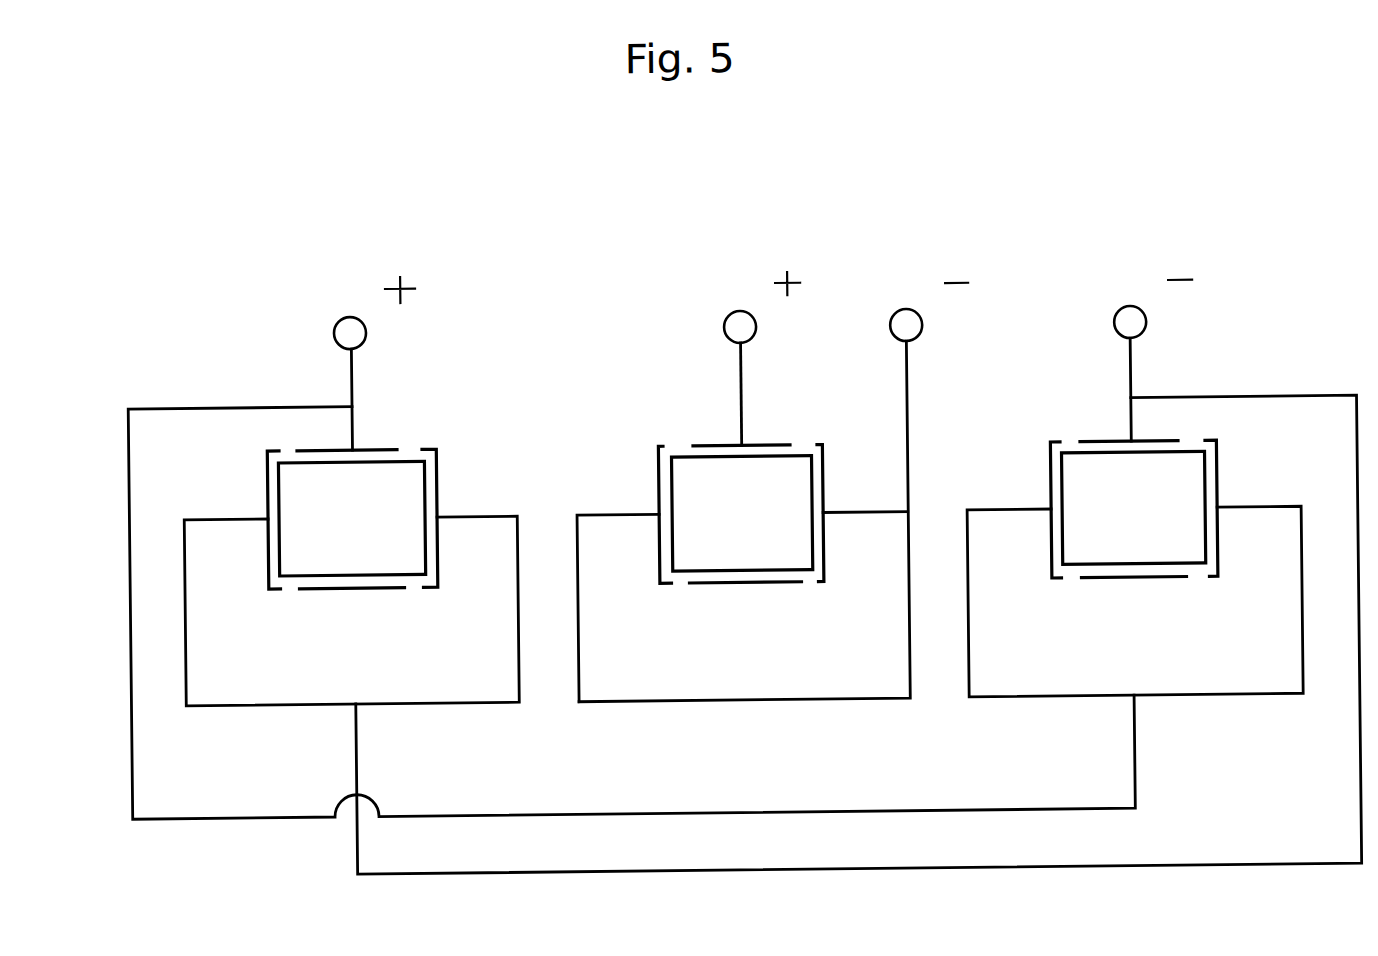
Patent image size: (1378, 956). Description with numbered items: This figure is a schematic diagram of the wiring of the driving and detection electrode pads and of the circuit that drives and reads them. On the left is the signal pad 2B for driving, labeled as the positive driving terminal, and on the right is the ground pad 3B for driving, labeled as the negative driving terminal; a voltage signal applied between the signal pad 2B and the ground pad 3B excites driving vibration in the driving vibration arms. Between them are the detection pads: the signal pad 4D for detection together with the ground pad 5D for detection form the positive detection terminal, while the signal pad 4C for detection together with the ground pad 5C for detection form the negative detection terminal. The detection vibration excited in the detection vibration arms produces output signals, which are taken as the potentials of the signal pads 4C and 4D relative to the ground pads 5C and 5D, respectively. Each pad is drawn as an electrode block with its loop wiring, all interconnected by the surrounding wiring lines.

The signal pad for driving 2B is at (744, 537).
The ground pad for driving 3B is at (1133, 446).
The signal pad for detection 4D is at (741, 434).
The ground pad for detection 5D is at (742, 455).
The signal pad for detection 4C is at (772, 434).
The ground pad for detection 5C is at (773, 454).